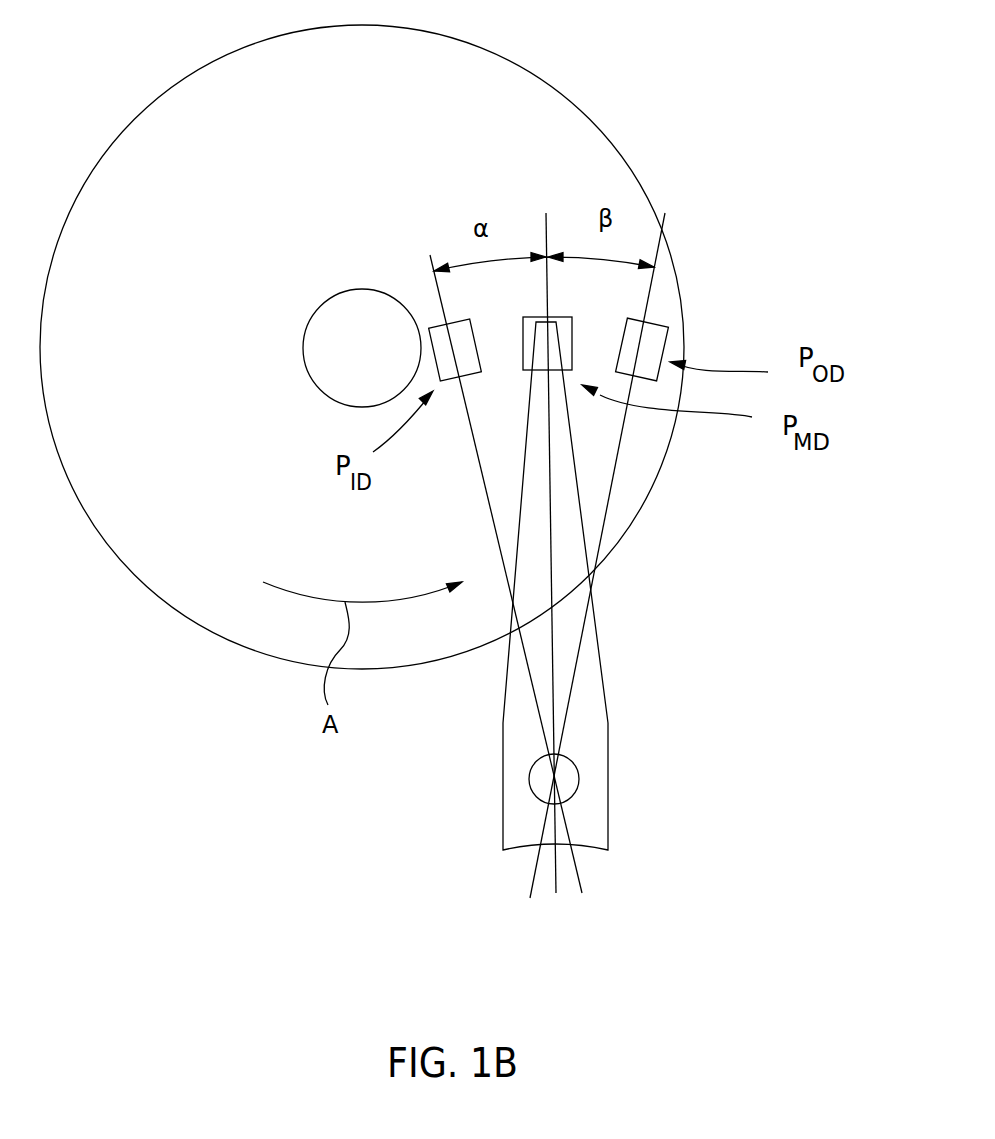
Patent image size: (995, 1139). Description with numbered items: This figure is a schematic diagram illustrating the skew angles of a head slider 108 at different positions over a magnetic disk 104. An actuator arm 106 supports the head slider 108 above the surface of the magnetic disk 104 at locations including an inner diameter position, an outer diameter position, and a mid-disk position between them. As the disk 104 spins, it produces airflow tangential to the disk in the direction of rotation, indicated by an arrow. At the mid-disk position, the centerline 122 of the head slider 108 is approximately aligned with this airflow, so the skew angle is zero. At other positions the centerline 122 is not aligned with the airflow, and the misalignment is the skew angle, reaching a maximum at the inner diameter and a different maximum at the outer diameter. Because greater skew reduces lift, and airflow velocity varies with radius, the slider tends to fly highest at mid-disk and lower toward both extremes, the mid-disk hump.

The magnetic disk 104 is at (168, 162).
The actuator arm 106 is at (632, 700).
The head slider 108 is at (636, 331).
The centerline 122 is at (545, 222).